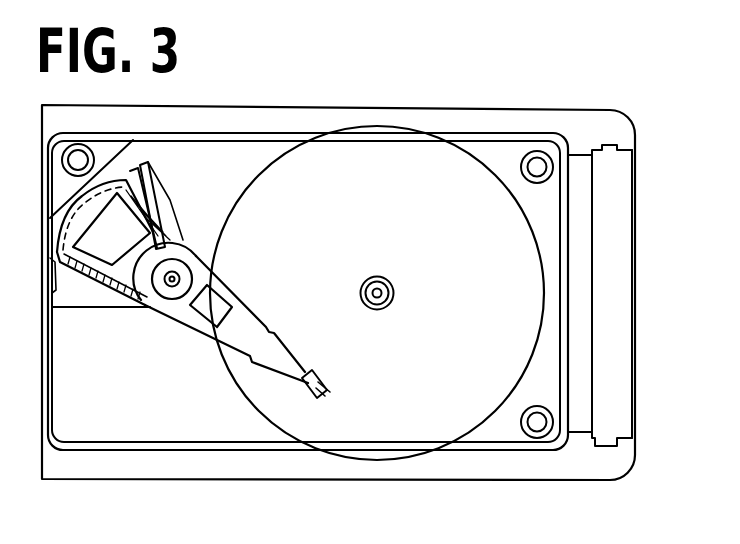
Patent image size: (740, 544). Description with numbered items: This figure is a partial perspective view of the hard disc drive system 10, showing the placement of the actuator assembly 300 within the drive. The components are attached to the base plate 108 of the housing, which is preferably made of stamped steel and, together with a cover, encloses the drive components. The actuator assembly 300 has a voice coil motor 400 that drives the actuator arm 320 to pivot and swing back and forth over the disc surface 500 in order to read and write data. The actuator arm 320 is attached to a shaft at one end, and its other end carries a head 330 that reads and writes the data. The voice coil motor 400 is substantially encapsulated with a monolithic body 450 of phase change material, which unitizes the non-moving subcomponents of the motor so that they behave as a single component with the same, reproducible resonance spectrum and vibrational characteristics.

The hard disc drive system 10 is at (145, 430).
The base plate 108 is at (558, 122).
The actuator assembly 300 is at (172, 282).
The actuator arm 320 is at (268, 350).
The head 330 is at (320, 377).
The voice coil motor 400 is at (83, 293).
The monolithic body 450 is at (190, 225).
The disc surface 500 is at (488, 294).